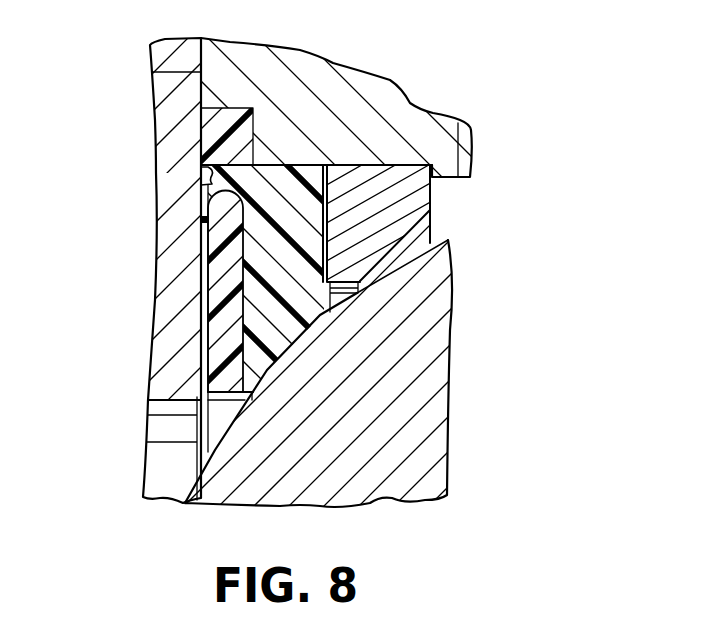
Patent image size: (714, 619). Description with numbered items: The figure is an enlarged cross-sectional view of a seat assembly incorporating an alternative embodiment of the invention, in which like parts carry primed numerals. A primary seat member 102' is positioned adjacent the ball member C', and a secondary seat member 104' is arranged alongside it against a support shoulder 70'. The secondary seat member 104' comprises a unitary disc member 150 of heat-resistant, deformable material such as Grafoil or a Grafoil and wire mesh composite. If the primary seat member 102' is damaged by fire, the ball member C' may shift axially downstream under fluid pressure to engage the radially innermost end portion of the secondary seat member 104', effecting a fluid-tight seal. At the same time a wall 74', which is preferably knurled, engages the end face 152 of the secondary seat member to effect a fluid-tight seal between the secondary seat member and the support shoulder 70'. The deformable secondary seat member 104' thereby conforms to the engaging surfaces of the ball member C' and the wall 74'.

The support shoulder 70' is at (208, 280).
The wall 74' is at (136, 185).
The end face 152 is at (205, 237).
The secondary seat member 104' is at (284, 280).
The unitary disc member 150 is at (223, 338).
The primary seat member 102' is at (403, 213).
The ball member C' is at (357, 309).